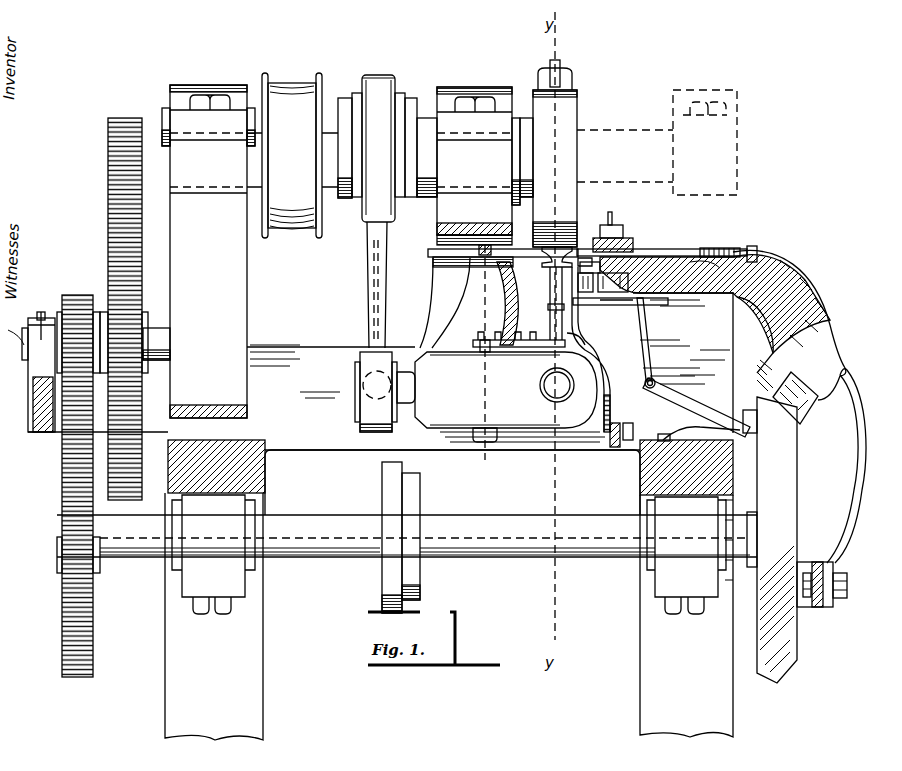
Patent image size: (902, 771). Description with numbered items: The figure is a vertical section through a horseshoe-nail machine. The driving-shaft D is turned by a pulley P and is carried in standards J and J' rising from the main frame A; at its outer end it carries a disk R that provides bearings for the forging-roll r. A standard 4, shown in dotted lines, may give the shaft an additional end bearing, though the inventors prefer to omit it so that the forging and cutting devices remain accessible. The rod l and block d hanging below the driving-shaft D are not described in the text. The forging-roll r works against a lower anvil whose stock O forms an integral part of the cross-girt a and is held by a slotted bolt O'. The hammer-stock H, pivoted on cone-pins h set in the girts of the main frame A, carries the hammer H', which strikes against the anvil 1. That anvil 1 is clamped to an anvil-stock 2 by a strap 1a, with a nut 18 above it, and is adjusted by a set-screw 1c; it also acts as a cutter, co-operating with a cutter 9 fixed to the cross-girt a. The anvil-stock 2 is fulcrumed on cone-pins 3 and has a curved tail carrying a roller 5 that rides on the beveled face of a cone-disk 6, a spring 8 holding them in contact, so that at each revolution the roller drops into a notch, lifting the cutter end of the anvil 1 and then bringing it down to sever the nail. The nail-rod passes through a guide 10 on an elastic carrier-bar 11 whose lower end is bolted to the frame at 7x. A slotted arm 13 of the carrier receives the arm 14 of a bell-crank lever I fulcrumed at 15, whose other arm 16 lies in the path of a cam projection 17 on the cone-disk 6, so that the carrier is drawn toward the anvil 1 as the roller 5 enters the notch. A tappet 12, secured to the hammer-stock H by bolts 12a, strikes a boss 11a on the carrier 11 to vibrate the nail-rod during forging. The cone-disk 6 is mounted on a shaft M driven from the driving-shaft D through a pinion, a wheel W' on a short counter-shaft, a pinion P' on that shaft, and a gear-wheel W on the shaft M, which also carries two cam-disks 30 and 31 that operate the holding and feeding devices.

The standard J is at (231, 251).
The standard J' is at (485, 166).
The pulley P is at (292, 155).
The pinion P' is at (88, 351).
The driving-shaft D is at (380, 145).
The eccentric rod l is at (366, 290).
The crosshead d is at (385, 392).
The cross-girt a is at (443, 398).
The cone-pins h is at (557, 385).
The hammer-stock H is at (469, 306).
The hammer H' is at (503, 245).
The disk R is at (555, 157).
The forging-roll r is at (563, 70).
The standard 4 is at (727, 152).
The anvil 1 is at (641, 262).
The strap 1a is at (626, 238).
The set-screw 1c is at (758, 258).
The anvil-stock 2 is at (789, 325).
The cone-pins 3 is at (705, 270).
The cutter 9 is at (587, 267).
The guide 10 is at (570, 248).
The nut 18 is at (608, 222).
The anvil-stock O is at (544, 264).
The slotted bolt O' is at (519, 307).
The carrier-bar 11 is at (603, 366).
The boss 11a is at (580, 353).
The tappet 12 is at (548, 345).
The fastening-bolts 12a is at (490, 355).
The longitudinal arm 13 is at (616, 306).
The arm 14 is at (648, 349).
The bell-crank lever I is at (647, 367).
The fulcrum 15 is at (656, 388).
The arm 16 is at (696, 407).
The cam projection 17 is at (750, 408).
The roller 5 is at (795, 398).
The cone-disk 6 is at (777, 527).
The bolt 7x is at (675, 431).
The spring 8 is at (840, 488).
The main frame A is at (449, 590).
The shaft M is at (519, 504).
The cam-disk 30 is at (418, 590).
The cam-disk 31 is at (384, 576).
The gear-wheel W is at (51, 486).
The wheel W' is at (116, 309).